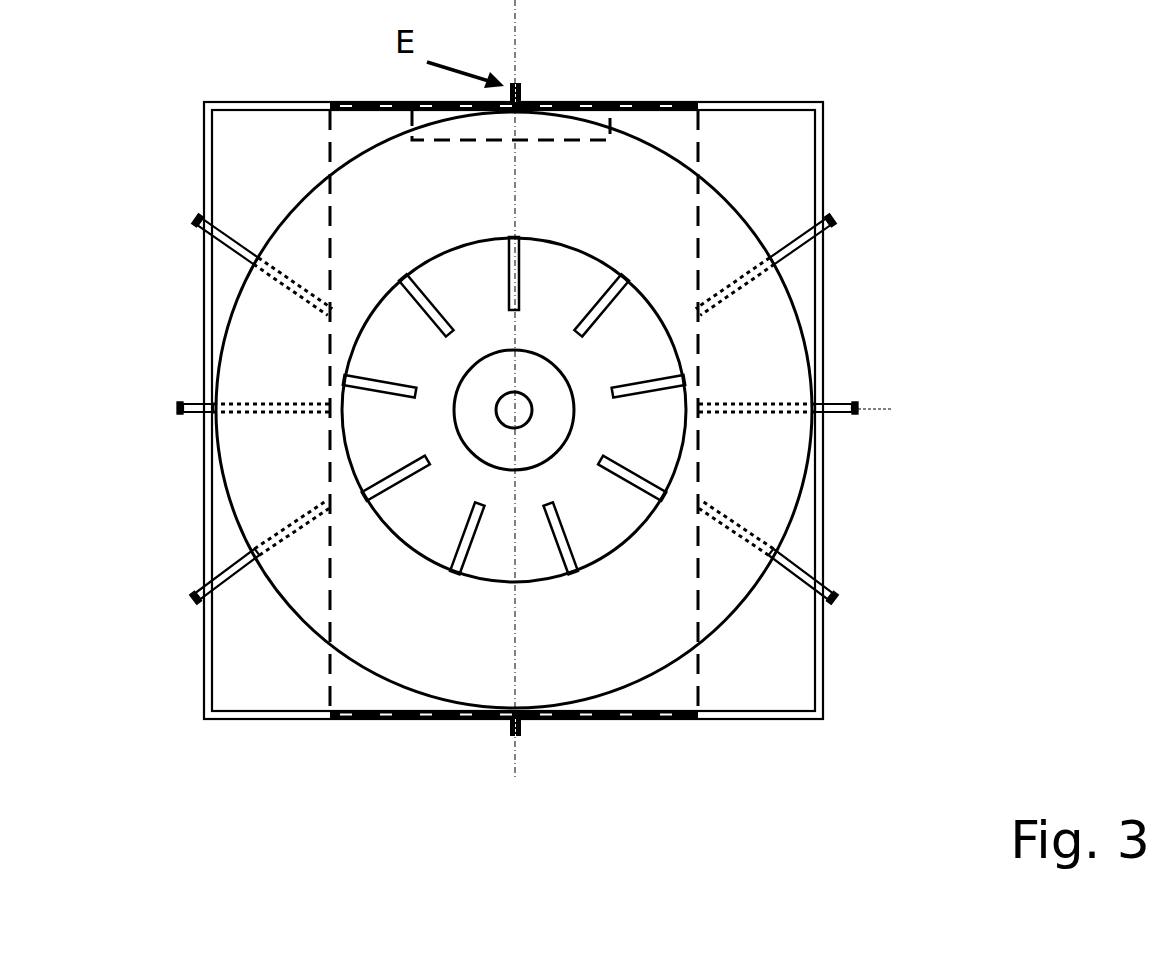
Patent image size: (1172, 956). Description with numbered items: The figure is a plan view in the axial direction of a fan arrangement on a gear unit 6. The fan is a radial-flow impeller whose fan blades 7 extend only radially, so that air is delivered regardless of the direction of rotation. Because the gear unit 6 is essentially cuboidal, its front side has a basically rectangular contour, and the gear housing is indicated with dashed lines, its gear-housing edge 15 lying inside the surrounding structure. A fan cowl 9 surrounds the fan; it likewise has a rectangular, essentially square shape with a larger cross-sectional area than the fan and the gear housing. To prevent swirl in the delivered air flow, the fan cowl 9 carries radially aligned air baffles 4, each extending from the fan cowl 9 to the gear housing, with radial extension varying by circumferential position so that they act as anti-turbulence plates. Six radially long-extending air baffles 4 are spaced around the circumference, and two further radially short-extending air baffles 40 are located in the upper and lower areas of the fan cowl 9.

The air baffle 4 is at (227, 247).
The gear unit 6 is at (673, 141).
The fan blade 7 is at (608, 297).
The fan cowl 9 is at (817, 682).
The gear-housing edge 15 is at (333, 647).
The air baffle 40 is at (521, 90).